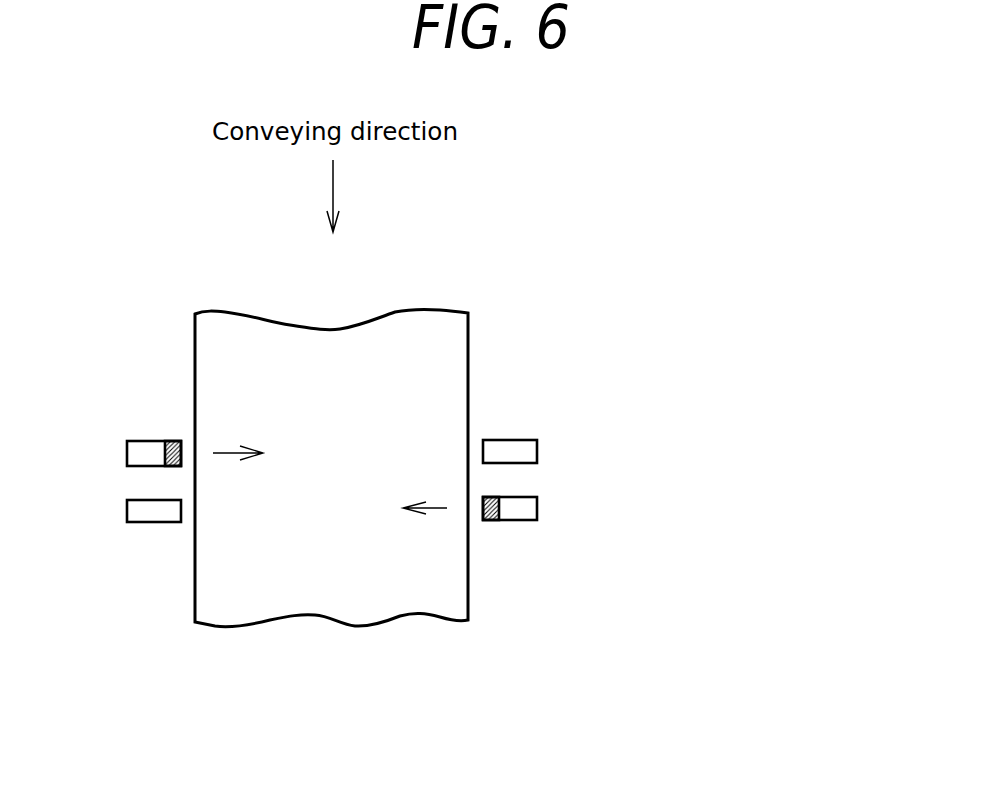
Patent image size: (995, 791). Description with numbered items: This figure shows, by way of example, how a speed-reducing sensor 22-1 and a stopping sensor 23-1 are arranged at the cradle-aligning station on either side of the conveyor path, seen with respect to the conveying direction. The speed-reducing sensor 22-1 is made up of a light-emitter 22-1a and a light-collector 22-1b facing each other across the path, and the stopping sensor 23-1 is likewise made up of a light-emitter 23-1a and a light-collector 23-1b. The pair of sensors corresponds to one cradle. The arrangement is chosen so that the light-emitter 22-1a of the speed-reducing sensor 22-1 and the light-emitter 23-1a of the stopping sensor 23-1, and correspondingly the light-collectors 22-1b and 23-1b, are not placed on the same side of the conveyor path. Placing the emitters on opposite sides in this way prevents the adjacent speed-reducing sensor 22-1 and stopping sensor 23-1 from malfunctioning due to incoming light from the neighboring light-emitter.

The speed-reducing sensor 22-1 is at (475, 360).
The light-emitter 22-1a is at (142, 441).
The light-collector 22-1b is at (512, 440).
The stopping sensor 23-1 is at (492, 599).
The light-emitter 23-1a is at (515, 520).
The light-collector 23-1b is at (143, 522).